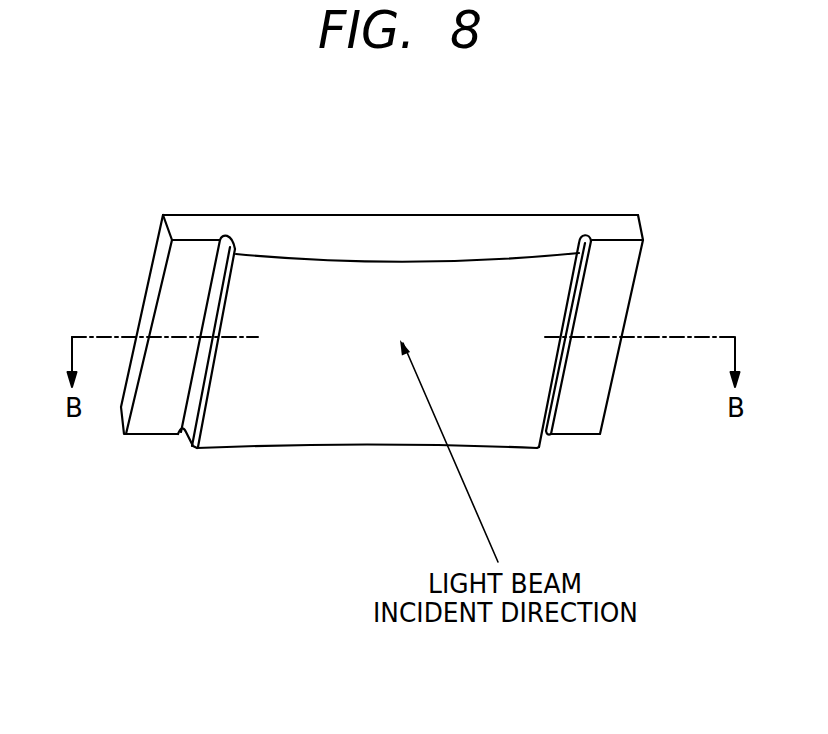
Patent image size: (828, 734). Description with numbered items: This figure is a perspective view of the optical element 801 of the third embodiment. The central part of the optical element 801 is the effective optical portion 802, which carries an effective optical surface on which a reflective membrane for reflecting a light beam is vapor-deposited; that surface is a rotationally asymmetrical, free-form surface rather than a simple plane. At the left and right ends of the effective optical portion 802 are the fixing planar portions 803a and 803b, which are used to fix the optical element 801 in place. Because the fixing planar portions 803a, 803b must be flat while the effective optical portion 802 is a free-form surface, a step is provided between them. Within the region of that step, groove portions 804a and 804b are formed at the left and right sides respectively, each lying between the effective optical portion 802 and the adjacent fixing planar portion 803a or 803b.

The optical element 801 is at (387, 198).
The effective optical portion 802 is at (355, 373).
The fixing planar portion 803a is at (195, 291).
The fixing planar portion 803b is at (590, 308).
The groove portion 804a is at (224, 234).
The groove portion 804b is at (587, 232).